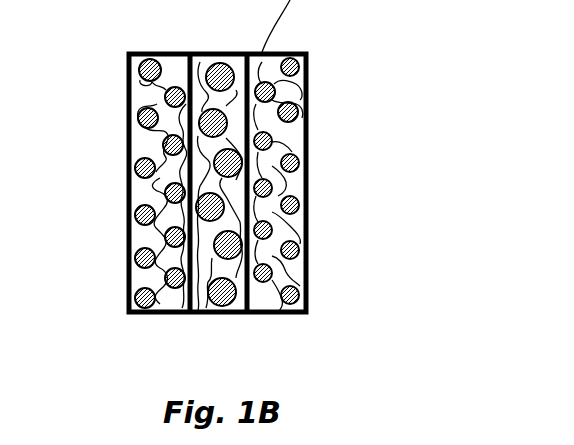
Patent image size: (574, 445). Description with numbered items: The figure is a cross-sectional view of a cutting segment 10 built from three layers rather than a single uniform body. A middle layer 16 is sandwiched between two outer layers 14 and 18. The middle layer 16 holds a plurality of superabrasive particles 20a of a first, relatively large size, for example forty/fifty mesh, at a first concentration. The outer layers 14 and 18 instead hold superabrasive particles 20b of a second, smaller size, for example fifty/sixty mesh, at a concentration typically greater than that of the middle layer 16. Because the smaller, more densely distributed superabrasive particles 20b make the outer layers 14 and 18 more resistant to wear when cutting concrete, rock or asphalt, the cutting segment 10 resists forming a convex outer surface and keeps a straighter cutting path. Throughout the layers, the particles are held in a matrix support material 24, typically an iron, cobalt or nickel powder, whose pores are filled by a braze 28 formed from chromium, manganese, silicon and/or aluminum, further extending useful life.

The cutting segment 10 is at (413, 184).
The outer layer 14 is at (129, 85).
The middle layer 16 is at (240, 313).
The outer layer 18 is at (306, 228).
The superabrasive particles 20a is at (220, 54).
The superabrasive particles 20b is at (306, 73).
The matrix support material 24 is at (129, 187).
The braze 28 is at (129, 277).